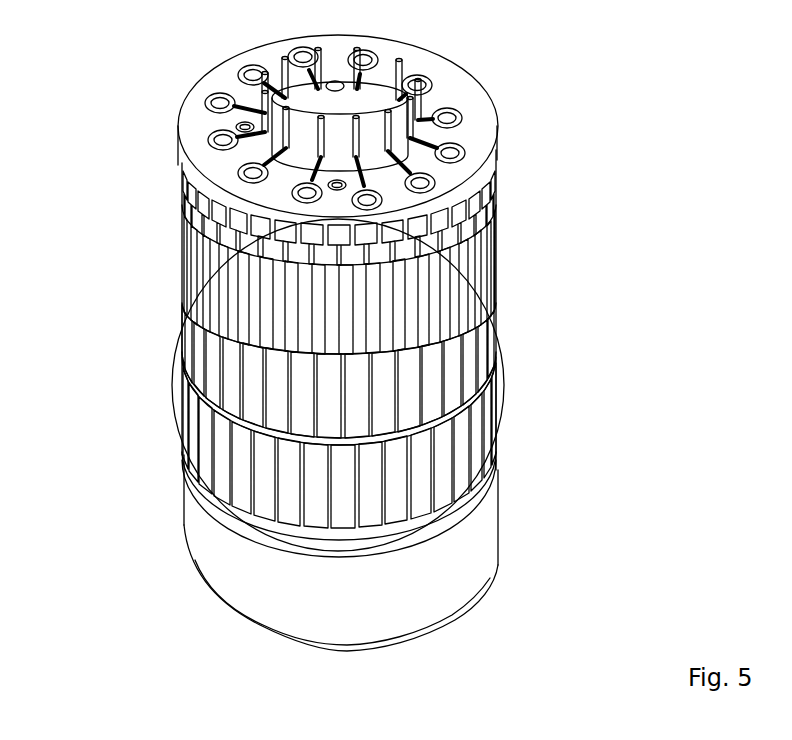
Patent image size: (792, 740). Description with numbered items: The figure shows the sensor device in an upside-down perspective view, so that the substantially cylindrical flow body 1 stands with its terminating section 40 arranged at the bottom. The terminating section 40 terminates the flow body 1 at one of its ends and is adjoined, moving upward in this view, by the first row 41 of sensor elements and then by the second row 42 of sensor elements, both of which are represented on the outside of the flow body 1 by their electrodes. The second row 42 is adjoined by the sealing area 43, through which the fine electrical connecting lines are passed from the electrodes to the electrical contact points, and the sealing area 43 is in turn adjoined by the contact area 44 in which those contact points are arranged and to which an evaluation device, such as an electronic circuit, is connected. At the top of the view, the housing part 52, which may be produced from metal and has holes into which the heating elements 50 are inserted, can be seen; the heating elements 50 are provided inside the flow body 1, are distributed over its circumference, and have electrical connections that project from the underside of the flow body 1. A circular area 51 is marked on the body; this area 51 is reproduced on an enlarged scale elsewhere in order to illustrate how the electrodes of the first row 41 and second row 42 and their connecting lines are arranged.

The flow body 1 is at (370, 330).
The terminating section 40 is at (504, 470).
The first row 41 is at (513, 427).
The second row 42 is at (513, 343).
The sealing area 43 is at (499, 205).
The contact area 44 is at (499, 153).
The heating elements 50 is at (448, 106).
The area 51 is at (172, 385).
The housing part 52 is at (210, 84).